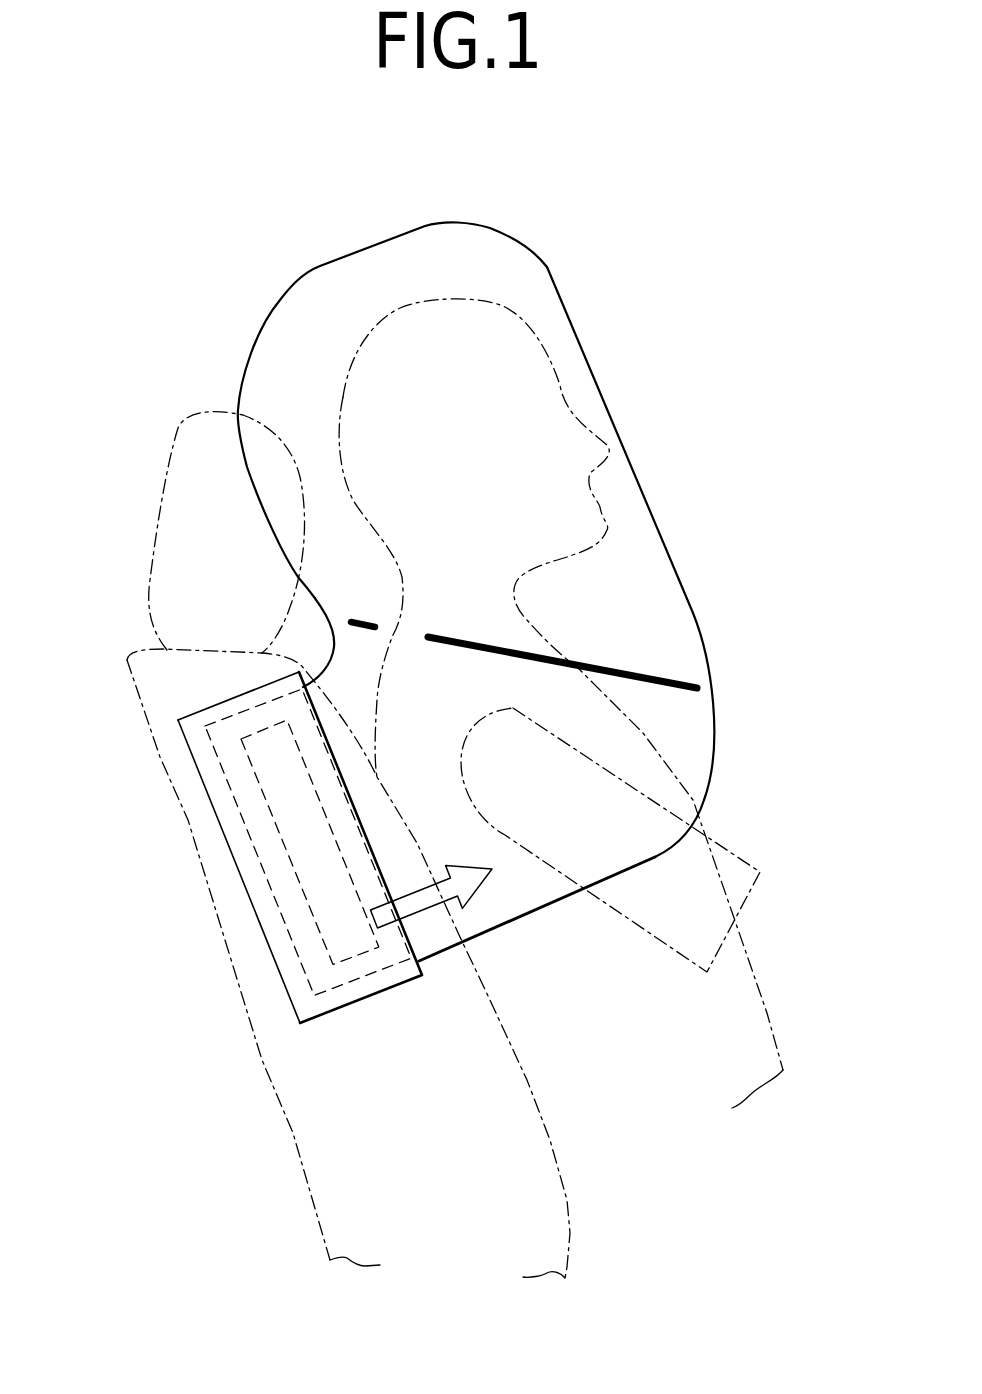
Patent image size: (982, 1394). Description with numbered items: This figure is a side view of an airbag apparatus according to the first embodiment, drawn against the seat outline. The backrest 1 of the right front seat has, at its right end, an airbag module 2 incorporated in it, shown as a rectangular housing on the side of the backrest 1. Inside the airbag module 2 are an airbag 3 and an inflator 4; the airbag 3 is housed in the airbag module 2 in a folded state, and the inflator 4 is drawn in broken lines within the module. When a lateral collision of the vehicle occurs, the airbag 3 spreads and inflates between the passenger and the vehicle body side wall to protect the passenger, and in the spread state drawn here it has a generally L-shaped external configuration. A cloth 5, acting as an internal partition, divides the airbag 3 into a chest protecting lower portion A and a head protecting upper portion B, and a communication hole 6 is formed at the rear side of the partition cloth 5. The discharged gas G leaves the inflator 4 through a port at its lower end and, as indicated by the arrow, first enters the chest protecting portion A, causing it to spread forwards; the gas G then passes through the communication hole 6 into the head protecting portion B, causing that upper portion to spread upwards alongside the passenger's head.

The backrest 1 is at (268, 1058).
The airbag module 2 is at (268, 943).
The airbag 3 is at (578, 292).
The inflator 4 is at (243, 753).
The cloth 5 is at (633, 672).
The communication hole 6 is at (373, 623).
The chest protecting lower portion A is at (660, 862).
The head protecting upper portion B is at (660, 528).
The discharged gas G is at (487, 883).